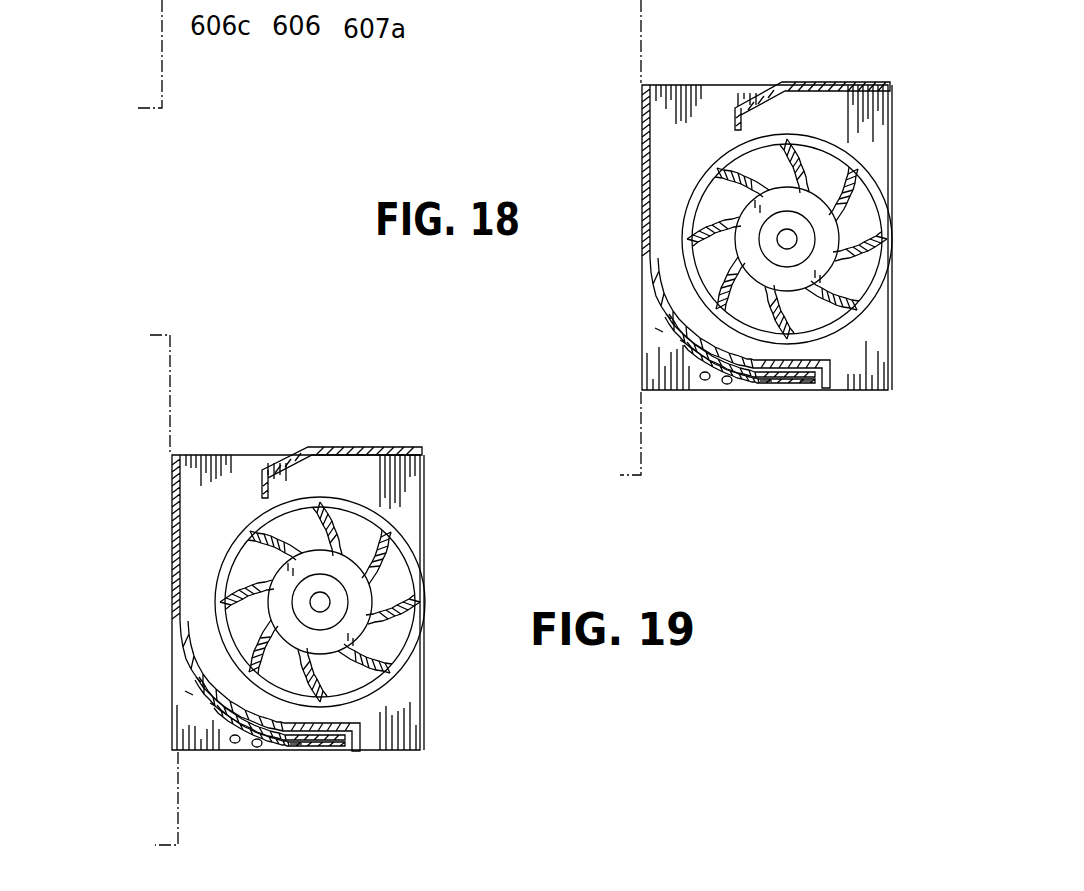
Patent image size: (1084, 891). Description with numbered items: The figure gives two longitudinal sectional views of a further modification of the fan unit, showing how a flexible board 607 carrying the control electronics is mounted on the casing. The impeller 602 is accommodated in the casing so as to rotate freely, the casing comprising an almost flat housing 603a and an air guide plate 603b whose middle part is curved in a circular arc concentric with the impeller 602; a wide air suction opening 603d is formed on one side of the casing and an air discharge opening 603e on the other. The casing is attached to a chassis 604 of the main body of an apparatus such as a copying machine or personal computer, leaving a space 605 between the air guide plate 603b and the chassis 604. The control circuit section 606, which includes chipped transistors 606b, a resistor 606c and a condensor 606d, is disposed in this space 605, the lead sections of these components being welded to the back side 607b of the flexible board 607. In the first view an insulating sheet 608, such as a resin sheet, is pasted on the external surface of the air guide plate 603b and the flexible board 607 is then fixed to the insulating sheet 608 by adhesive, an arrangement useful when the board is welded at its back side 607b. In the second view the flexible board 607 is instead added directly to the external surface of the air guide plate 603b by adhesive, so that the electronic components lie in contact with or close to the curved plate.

In FIG. 18, the impeller 602 is at (855, 165).
In FIG. 19, the impeller 602 is at (400, 535).
In FIG. 18, the housing 603a is at (824, 84).
In FIG. 19, the housing 603a is at (360, 448).
In FIG. 18, the air guide plate 603b is at (643, 210).
In FIG. 19, the air guide plate 603b is at (175, 558).
In FIG. 18, the air suction opening 603d is at (875, 344).
In FIG. 19, the air suction opening 603d is at (405, 703).
In FIG. 18, the air discharge opening 603e is at (705, 100).
In FIG. 19, the air discharge opening 603e is at (233, 465).
In FIG. 18, the chassis 604 is at (638, 30).
In FIG. 19, the chassis 604 is at (167, 412).
In FIG. 18, the space 605 is at (640, 366).
In FIG. 19, the space 605 is at (180, 724).
In FIG. 18, the control circuit section 606 is at (747, 392).
In FIG. 19, the control circuit section 606 is at (200, 713).
In FIG. 18, the chipped transistors 606b is at (675, 350).
In FIG. 19, the chipped transistors 606b is at (190, 688).
In FIG. 18, the resistor 606c is at (700, 387).
In FIG. 19, the resistor 606c is at (232, 745).
In FIG. 18, the condensor 606d is at (720, 373).
In FIG. 19, the condensor 606d is at (250, 750).
In FIG. 18, the flexible board 607 is at (818, 372).
In FIG. 19, the flexible board 607 is at (322, 745).
In FIG. 18, the back side of the flexible board 607b is at (770, 378).
In FIG. 19, the back side of the flexible board 607b is at (292, 747).
In FIG. 18, the insulating sheet 608 is at (812, 385).